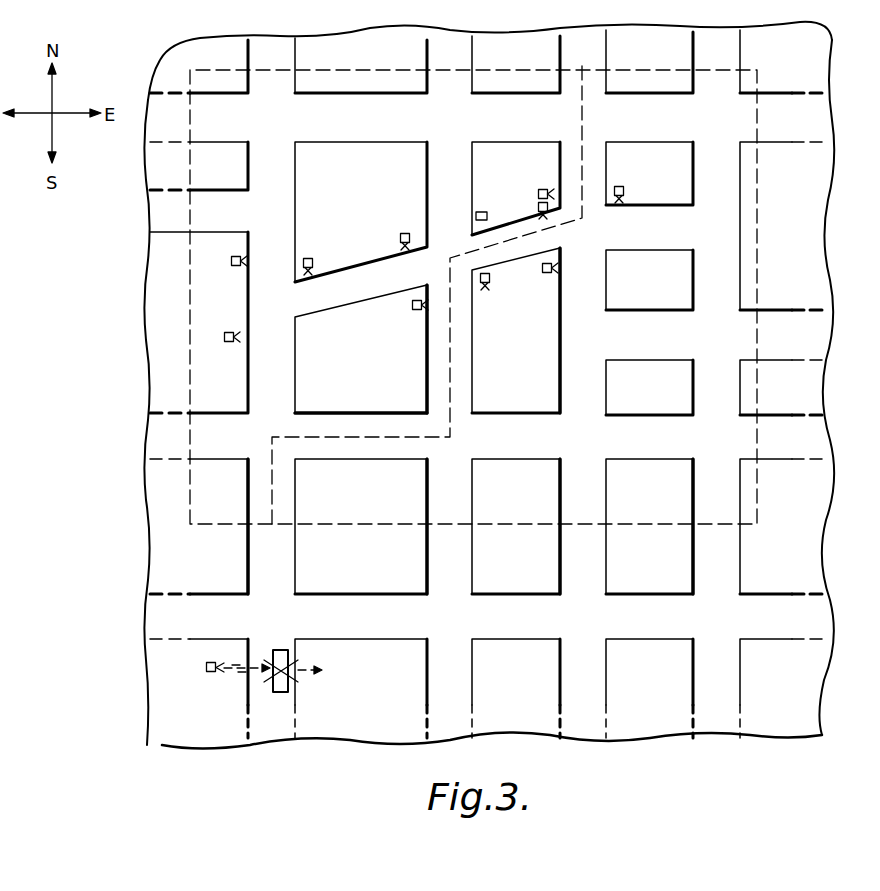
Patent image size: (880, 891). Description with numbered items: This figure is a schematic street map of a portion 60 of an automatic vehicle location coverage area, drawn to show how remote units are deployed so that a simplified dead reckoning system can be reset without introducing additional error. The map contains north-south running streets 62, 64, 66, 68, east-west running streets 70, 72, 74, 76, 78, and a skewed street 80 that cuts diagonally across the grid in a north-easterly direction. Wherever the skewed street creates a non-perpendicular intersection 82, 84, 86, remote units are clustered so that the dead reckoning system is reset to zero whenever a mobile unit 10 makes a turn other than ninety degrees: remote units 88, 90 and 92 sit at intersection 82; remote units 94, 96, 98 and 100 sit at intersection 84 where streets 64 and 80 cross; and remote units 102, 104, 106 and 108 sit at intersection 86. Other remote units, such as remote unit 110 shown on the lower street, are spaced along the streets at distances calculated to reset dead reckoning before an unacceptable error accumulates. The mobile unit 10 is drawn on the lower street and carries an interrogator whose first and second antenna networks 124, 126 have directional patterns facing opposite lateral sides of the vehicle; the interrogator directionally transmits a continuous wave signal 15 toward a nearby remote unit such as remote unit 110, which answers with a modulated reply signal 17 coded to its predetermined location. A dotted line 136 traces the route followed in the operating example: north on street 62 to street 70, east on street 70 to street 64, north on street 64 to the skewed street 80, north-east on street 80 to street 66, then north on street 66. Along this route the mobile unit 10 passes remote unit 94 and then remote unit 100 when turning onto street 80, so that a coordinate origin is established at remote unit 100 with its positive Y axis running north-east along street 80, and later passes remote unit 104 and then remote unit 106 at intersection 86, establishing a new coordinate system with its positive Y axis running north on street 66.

The mobile unit 10 is at (281, 649).
The continuous wave signal 15 is at (240, 676).
The reply signal 17 is at (237, 663).
The portion of AVL coverage area 60 is at (188, 514).
The north-south running street 62 is at (280, 574).
The north-south running street 64 is at (465, 574).
The north-south running street 66 is at (597, 572).
The north-south running street 68 is at (730, 572).
The east-west running street 70 is at (370, 450).
The east-west running street 72 is at (222, 212).
The east-west running street 74 is at (222, 112).
The east-west running street 76 is at (658, 244).
The east-west running street 78 is at (658, 348).
The skewed street 80 is at (374, 306).
The non-perpendicular intersection 82 is at (263, 297).
The non-perpendicular intersection 84 is at (460, 268).
The non-perpendicular intersection 86 is at (583, 220).
The remote unit 88 is at (225, 342).
The remote unit 90 is at (236, 256).
The remote unit 92 is at (308, 258).
The remote unit 94 is at (412, 309).
The remote unit 96 is at (405, 233).
The remote unit 98 is at (483, 211).
The remote unit 100 is at (487, 283).
The remote unit 102 is at (543, 273).
The remote unit 104 is at (538, 209).
The remote unit 106 is at (540, 189).
The remote unit 108 is at (624, 188).
The remote unit 110 is at (211, 672).
The first antenna network 124 is at (265, 664).
The second antenna network 126 is at (300, 680).
The dotted line 136 is at (455, 432).